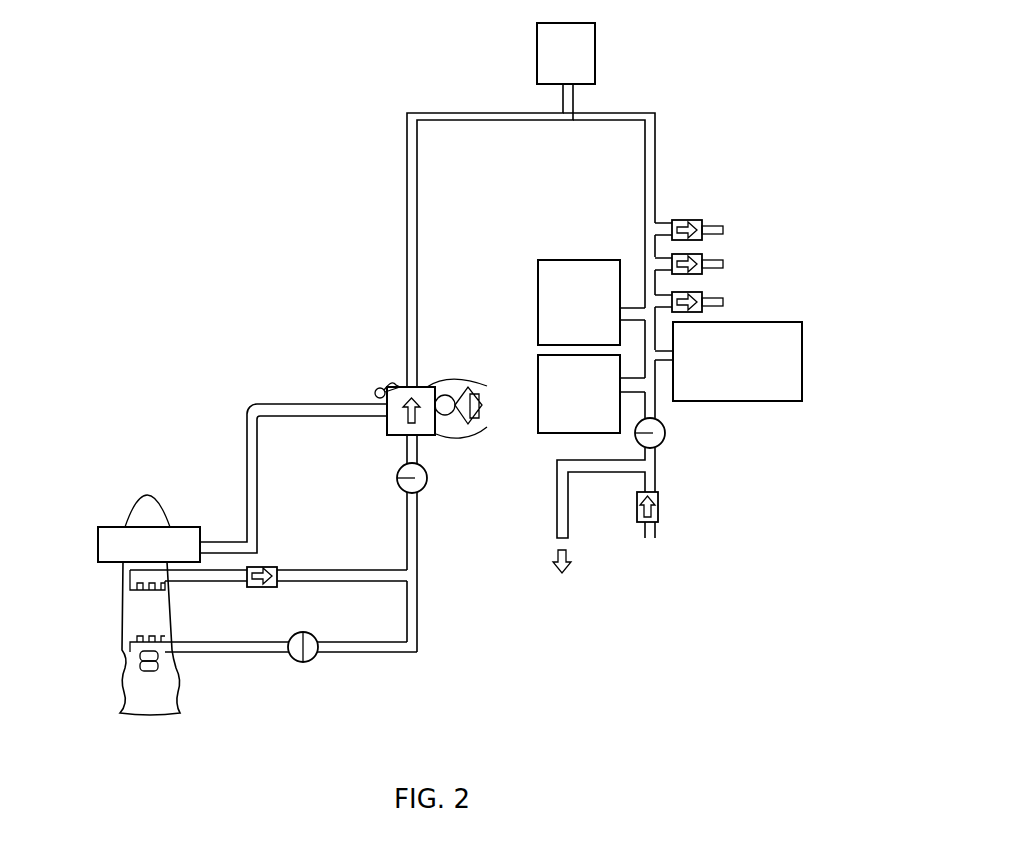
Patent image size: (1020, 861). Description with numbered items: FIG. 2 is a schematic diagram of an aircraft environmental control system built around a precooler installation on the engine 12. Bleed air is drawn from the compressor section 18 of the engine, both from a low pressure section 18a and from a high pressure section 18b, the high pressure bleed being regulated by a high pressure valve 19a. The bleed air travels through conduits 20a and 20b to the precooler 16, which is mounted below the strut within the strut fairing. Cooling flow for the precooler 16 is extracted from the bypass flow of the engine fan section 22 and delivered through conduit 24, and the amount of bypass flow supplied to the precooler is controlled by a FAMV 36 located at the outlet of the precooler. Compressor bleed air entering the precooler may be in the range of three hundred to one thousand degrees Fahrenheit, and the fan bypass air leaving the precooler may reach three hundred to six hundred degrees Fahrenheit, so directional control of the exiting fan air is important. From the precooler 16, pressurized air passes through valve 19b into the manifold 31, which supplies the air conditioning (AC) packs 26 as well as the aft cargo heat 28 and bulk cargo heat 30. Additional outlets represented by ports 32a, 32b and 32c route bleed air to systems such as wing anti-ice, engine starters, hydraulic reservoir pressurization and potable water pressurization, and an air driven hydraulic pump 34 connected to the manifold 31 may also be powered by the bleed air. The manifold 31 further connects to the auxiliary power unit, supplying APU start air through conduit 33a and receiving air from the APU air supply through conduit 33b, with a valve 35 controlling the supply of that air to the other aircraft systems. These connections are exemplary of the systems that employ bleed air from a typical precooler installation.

The aircraft pneumatic system 12 is at (159, 678).
The precooler 16 is at (432, 387).
The compressor section 18 is at (137, 622).
The low pressure section 18a is at (164, 580).
The high pressure section 18b is at (160, 648).
The high pressure valve 19a is at (310, 633).
The valve 19b is at (420, 492).
The conduit 20a is at (318, 570).
The conduit 20b is at (373, 652).
The engine fan section 22 is at (99, 548).
The conduit 24 is at (247, 433).
The air conditioning (AC) packs 26 is at (537, 65).
The aft cargo heat 28 is at (537, 288).
The bulk cargo heat 30 is at (542, 432).
The manifold 31 is at (406, 236).
The port 32a is at (722, 230).
The port 32b is at (722, 268).
The port 32c is at (722, 302).
The conduit 33a is at (556, 528).
The conduit 33b is at (655, 530).
The air driven hydraulic pump 34 is at (790, 401).
The valve 35 is at (660, 445).
The FAMV 36 is at (453, 437).